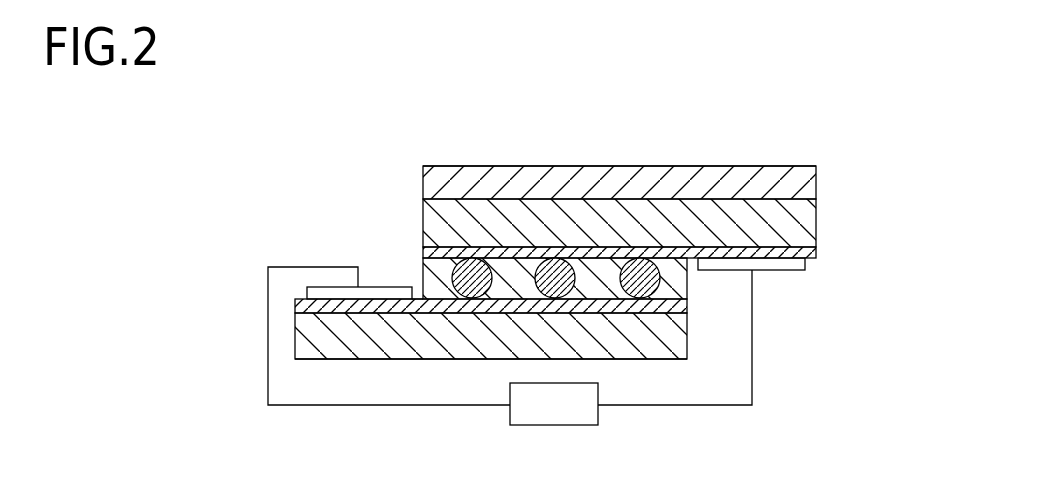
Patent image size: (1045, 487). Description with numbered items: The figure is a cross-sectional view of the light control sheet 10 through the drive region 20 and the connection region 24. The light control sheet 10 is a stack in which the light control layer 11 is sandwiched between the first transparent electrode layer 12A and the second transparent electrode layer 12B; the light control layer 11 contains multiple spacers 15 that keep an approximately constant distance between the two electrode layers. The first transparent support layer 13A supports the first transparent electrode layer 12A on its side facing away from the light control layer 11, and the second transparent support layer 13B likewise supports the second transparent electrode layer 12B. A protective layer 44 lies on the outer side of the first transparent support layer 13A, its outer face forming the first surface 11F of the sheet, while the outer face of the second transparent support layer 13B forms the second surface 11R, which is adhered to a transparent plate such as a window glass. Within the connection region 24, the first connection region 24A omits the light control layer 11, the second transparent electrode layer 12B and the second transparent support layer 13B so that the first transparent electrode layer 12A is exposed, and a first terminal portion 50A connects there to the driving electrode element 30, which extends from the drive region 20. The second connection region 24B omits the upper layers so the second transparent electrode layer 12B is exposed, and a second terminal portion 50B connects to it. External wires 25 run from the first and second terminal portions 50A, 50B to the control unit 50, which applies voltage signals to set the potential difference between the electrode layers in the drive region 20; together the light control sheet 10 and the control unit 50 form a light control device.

The light control sheet 10 is at (397, 156).
The drive region 20 is at (656, 132).
The protective layer 44 is at (465, 166).
The light control layer 11 is at (688, 279).
The first surface 11F is at (594, 166).
The second surface 11R is at (373, 360).
The first transparent support layer 13A is at (816, 218).
The second transparent support layer 13B is at (295, 337).
The first transparent electrode layer 12A is at (816, 248).
The second transparent electrode layer 12B is at (295, 306).
The driving electrode element 30 is at (688, 305).
The spacer 15 is at (434, 294).
The connection region 24 is at (569, 259).
The first connection region 24A is at (782, 288).
The second connection region 24B is at (331, 249).
The first terminal portion 50A is at (808, 265).
The second terminal portion 50B is at (372, 287).
The external wire 25 is at (300, 405).
The control unit 50 is at (598, 418).